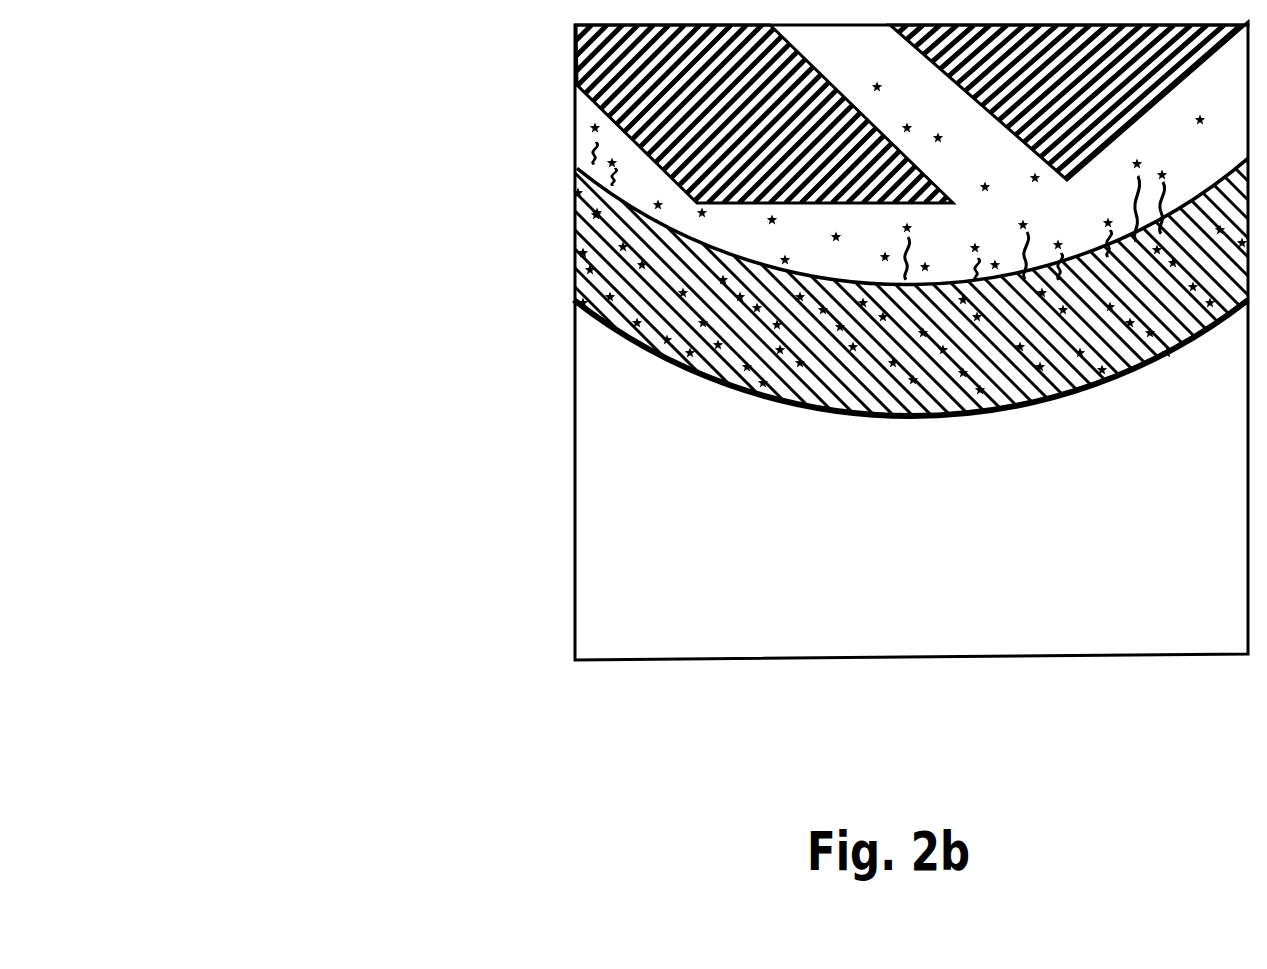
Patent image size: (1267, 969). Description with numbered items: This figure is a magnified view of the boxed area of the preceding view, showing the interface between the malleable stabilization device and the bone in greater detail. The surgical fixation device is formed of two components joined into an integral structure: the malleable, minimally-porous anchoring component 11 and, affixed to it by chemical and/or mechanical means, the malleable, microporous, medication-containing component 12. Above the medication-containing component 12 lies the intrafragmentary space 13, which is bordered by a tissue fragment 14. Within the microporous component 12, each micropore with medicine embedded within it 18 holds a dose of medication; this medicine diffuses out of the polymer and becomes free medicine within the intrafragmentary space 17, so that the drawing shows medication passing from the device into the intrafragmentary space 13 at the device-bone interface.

The malleable, minimally-porous anchoring component 11 is at (635, 352).
The malleable, microporous, medication-containing component 12 is at (695, 310).
The intrafragmentary space 13 is at (802, 240).
The tissue fragment 14 is at (625, 78).
The free medicine within the intrafragmentary space 17 is at (603, 167).
The micropore with medicine embedded within it 18 is at (667, 279).